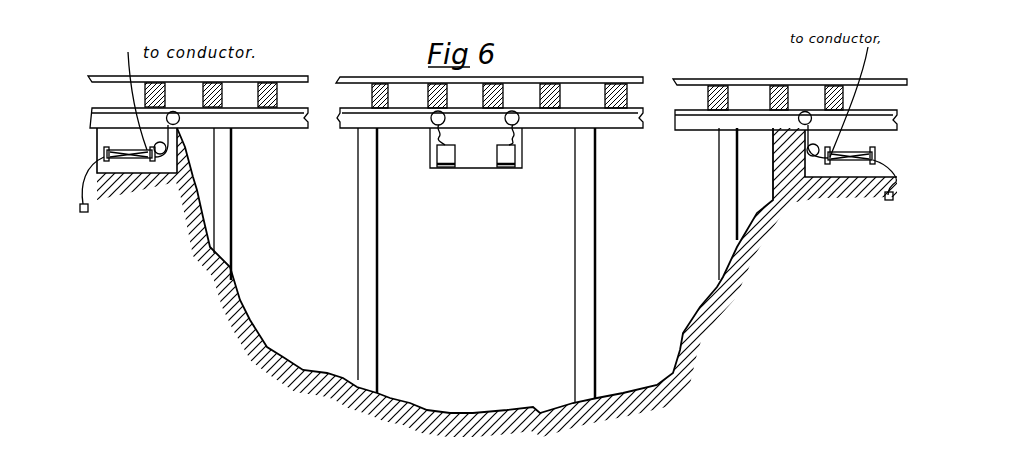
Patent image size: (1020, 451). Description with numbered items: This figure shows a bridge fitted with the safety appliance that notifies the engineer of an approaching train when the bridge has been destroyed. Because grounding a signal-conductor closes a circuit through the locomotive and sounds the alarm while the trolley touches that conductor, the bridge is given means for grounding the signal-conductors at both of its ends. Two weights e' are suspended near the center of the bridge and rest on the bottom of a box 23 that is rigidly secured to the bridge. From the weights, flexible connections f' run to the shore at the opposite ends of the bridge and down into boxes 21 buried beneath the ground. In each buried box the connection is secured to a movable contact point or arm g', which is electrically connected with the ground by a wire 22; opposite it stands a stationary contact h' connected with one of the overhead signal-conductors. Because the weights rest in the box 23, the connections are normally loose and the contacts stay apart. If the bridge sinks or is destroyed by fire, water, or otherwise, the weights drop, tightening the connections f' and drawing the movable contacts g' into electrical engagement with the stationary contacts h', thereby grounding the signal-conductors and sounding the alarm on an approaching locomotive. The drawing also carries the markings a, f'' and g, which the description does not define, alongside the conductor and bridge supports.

The track rail a is at (693, 80).
The flexible connection f' is at (617, 165).
The conductor beam section f'' is at (212, 130).
The movable contact g' is at (519, 134).
The contact plate g is at (488, 186).
The stationary contact h' is at (498, 135).
The weight e' is at (475, 157).
The box 21 is at (123, 160).
The wire 22 is at (104, 155).
The box 23 is at (523, 152).